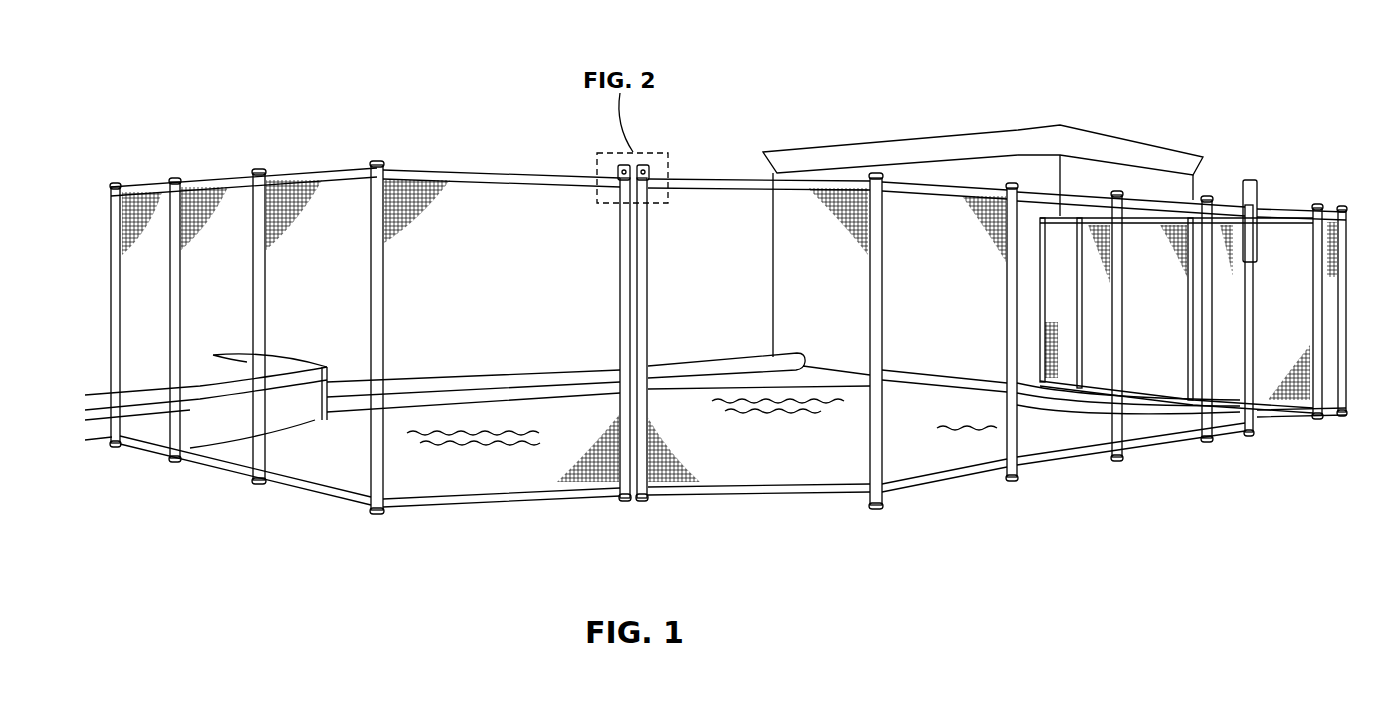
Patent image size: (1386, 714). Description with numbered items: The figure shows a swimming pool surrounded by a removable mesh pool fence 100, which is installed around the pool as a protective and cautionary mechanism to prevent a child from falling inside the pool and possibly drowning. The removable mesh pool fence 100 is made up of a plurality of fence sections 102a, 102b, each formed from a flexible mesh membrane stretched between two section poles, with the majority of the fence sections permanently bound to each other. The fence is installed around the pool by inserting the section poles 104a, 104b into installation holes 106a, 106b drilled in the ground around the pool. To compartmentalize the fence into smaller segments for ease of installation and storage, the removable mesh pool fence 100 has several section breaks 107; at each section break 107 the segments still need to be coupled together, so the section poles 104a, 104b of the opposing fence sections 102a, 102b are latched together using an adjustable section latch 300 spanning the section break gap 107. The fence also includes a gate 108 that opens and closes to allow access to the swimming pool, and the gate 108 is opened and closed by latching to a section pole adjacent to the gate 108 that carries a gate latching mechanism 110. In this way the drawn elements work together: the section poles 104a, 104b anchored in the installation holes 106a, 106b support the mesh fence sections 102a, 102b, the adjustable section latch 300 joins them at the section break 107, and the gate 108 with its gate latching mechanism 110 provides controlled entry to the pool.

The removable mesh pool fence 100 is at (420, 82).
The fence section 102a is at (717, 213).
The fence section 102b is at (488, 207).
The section pole 104a is at (649, 174).
The section pole 104b is at (617, 174).
The installation hole 106a is at (647, 500).
The installation hole 106b is at (621, 500).
The section break 107 is at (641, 292).
The gate 108 is at (1287, 210).
The gate latching mechanism 110 is at (1258, 187).
The adjustable section latch 300 is at (636, 204).